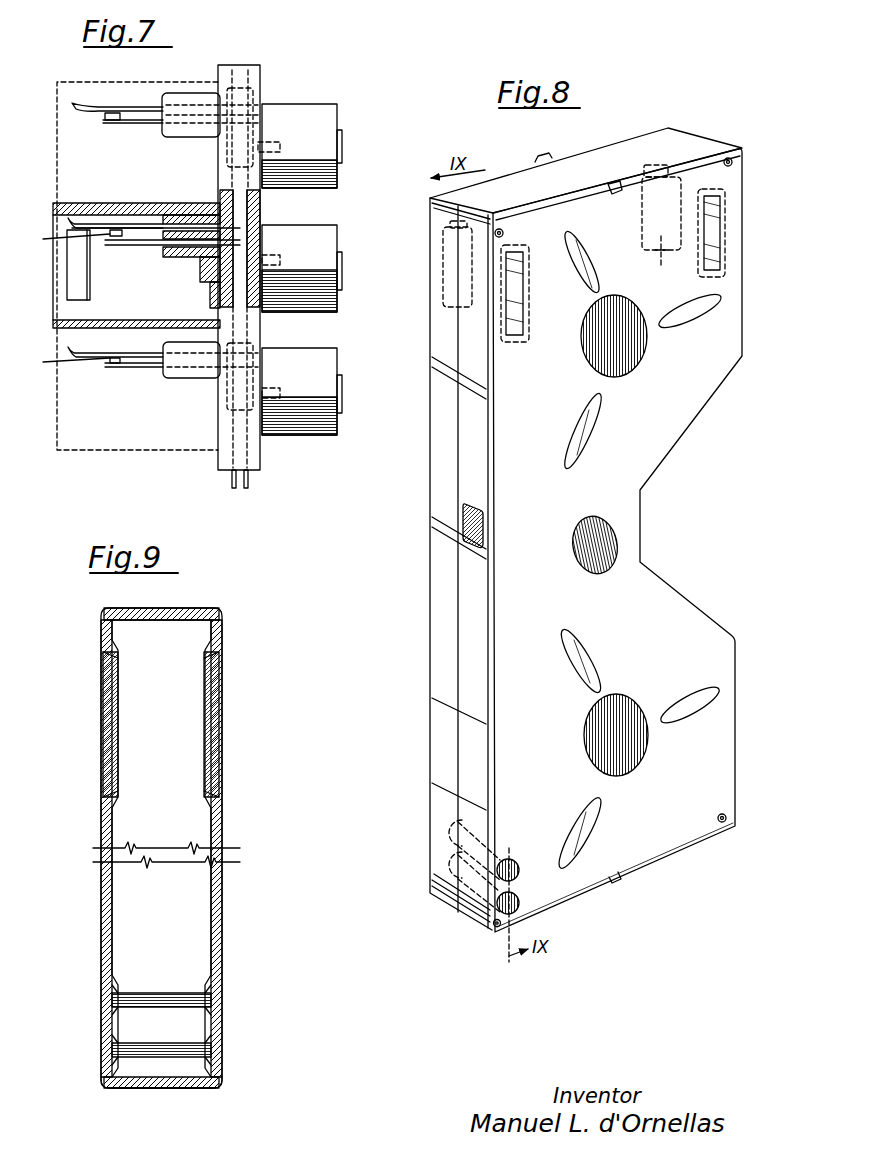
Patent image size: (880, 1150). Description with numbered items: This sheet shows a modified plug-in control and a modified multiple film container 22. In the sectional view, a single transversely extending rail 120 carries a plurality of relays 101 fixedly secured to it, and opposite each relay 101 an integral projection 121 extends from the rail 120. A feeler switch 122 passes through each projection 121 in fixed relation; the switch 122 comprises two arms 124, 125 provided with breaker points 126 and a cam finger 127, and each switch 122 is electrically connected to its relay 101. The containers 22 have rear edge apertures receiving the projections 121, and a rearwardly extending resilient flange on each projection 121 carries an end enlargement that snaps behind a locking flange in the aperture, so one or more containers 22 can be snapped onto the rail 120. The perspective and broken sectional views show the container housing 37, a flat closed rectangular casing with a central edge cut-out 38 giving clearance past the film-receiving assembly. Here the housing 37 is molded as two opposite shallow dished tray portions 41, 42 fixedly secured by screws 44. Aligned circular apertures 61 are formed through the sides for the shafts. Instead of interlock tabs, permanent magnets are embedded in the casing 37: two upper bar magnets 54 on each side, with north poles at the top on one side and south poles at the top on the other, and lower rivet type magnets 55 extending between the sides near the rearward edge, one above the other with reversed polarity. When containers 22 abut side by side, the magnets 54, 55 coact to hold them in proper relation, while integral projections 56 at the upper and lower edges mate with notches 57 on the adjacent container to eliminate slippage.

In FIG. 9, the multiple film container 22 is at (224, 906).
In FIG. 8, the multiple film container 22 is at (431, 645).
In FIG. 9, the housing 37 is at (221, 944).
In FIG. 8, the housing 37 is at (580, 881).
In FIG. 8, the central edge cut-out 38 is at (670, 445).
In FIG. 9, the shallow dished tray portion 41 is at (140, 1089).
In FIG. 8, the shallow dished tray portion 41 is at (437, 727).
In FIG. 9, the shallow dished tray portion 42 is at (188, 1089).
In FIG. 8, the shallow dished tray portion 42 is at (468, 762).
In FIG. 8, the screws 44 is at (736, 158).
In FIG. 9, the upper bar magnets 54 is at (101, 702).
In FIG. 8, the upper bar magnets 54 is at (522, 304).
In FIG. 9, the lower rivet type magnets 55 is at (143, 1050).
In FIG. 8, the lower rivet type magnets 55 is at (515, 905).
In FIG. 8, the integral projections 56 is at (543, 157).
In FIG. 8, the notches 57 is at (614, 182).
In FIG. 8, the circular apertures 61 is at (634, 347).
In FIG. 7, the relays 101 is at (312, 185).
In FIG. 7, the rail 120 is at (256, 92).
In FIG. 7, the integral projection 121 is at (198, 136).
In FIG. 7, the feeler switch 122 is at (152, 252).
In FIG. 7, the switch arm 124 is at (130, 121).
In FIG. 8, the switch arm 124 is at (471, 520).
In FIG. 7, the switch arm 125 is at (143, 128).
In FIG. 7, the breaker points 126 is at (61, 302).
In FIG. 7, the cam finger 127 is at (82, 114).